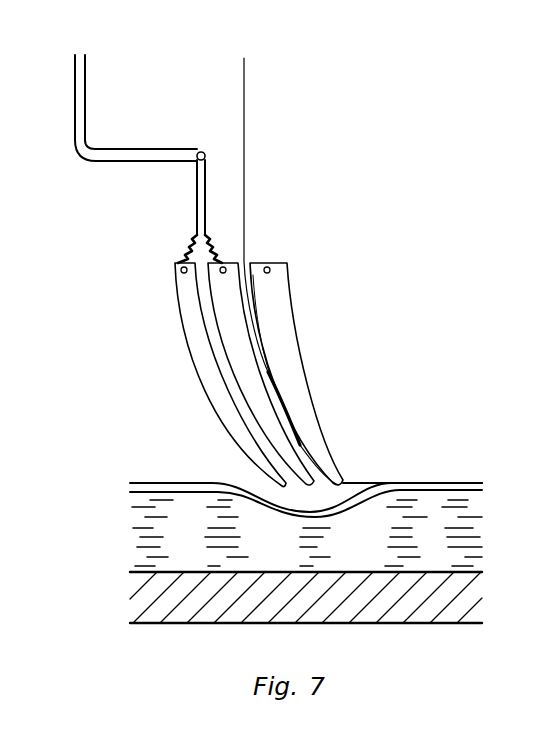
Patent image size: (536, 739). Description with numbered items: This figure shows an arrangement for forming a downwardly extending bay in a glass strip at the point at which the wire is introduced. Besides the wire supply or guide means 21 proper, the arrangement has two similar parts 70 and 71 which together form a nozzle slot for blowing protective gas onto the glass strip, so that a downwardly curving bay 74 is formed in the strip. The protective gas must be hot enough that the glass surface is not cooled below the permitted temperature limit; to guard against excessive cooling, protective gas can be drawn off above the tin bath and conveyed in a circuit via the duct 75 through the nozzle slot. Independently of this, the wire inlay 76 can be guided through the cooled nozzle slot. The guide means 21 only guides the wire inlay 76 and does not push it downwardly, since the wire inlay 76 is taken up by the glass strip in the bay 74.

The duct 75 is at (152, 158).
The nozzle slot part 70 is at (230, 327).
The nozzle slot part 71 is at (210, 378).
The wire supply or guide means 21 is at (278, 332).
The downwardly curving bay 74 is at (293, 498).
The wire inlay 76 is at (372, 483).